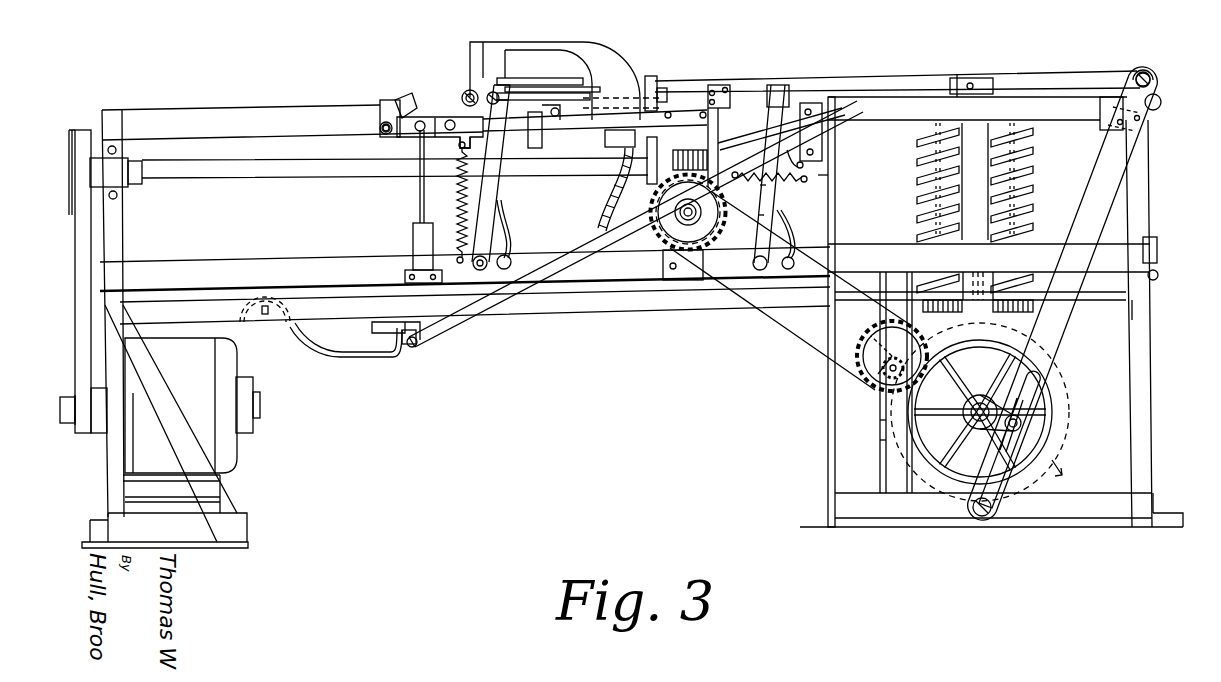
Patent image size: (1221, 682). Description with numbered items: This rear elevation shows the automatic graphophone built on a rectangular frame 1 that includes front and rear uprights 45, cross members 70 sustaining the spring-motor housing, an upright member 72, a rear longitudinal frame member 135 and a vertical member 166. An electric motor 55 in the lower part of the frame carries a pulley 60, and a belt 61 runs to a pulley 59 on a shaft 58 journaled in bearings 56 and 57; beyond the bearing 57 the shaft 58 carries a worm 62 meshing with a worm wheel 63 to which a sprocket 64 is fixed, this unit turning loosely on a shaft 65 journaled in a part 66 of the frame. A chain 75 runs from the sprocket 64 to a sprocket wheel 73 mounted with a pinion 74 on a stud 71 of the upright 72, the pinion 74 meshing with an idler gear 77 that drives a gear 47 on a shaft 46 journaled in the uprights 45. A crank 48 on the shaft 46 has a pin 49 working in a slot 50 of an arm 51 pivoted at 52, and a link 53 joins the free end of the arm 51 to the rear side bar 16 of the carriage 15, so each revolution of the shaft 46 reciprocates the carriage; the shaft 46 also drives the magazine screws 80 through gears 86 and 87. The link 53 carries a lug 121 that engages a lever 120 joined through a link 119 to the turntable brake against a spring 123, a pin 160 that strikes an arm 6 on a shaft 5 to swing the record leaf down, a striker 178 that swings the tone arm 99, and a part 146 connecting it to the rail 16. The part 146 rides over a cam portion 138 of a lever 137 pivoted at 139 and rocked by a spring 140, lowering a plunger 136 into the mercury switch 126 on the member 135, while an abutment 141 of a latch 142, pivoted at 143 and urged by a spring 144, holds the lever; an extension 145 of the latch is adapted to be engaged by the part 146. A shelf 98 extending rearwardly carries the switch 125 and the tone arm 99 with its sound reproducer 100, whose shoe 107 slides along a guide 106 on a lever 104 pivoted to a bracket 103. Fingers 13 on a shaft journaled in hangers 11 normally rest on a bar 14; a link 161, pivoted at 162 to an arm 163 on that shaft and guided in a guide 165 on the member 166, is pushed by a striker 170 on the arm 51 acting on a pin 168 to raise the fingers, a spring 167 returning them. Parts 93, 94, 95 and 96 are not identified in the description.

The frame 1 is at (1150, 370).
The shaft 5 is at (385, 134).
The arm 6 is at (407, 100).
The hangers 11 is at (383, 326).
The fingers 13 is at (320, 355).
The bar 14 is at (264, 330).
The carriage 15 is at (688, 76).
The side bars 16 is at (467, 90).
The uprights 45 is at (980, 412).
The shaft 46 is at (962, 406).
The gear 47 is at (1070, 410).
The crank 48 is at (962, 428).
The pin 49 is at (1022, 428).
The slot 50 is at (1035, 380).
The arm 51 is at (1068, 325).
The pivot 52 is at (990, 520).
The link 53 is at (1068, 72).
The electric motor 55 is at (191, 425).
The bearing 56 is at (125, 185).
The bearing 57 is at (648, 178).
The shaft 58 is at (272, 175).
The pulley 59 is at (70, 150).
The pulley 60 is at (88, 433).
The belt 61 is at (76, 268).
The worm 62 is at (688, 150).
The worm wheel 63 is at (722, 225).
The sprocket 64 is at (658, 248).
The shaft 65 is at (675, 212).
The part of frame 66 is at (683, 287).
The cross members 70 is at (880, 422).
The stud 71 is at (875, 388).
The upright member 72 is at (880, 462).
The sprocket wheel 73 is at (866, 342).
The pinion 74 is at (870, 345).
The chain 75 is at (822, 258).
The idler gear 77 is at (905, 375).
The screws 80 is at (918, 184).
The spur gear 86 is at (978, 272).
The gears 87 is at (922, 285).
The bracket 93 is at (1158, 245).
The pin 94 is at (1160, 272).
The frame post 95 is at (1152, 316).
The stop 96 is at (1162, 103).
The shelf 98 is at (612, 150).
The tone arm 99 is at (616, 55).
The sound reproducer 100 is at (512, 42).
The bracket 103 is at (665, 102).
The lever 104 is at (652, 78).
The guide 106 is at (565, 86).
The shoe 107 is at (533, 78).
The link 119 is at (737, 140).
The lever 120 is at (780, 195).
The lug 121 is at (777, 88).
The spring 123 is at (795, 215).
The switch 125 is at (545, 135).
The switch 126 is at (412, 237).
The rear longitudinal frame member 135 is at (320, 260).
The plunger 136 is at (419, 188).
The lever 137 is at (414, 120).
The cam portion 138 is at (390, 100).
The pivot 139 is at (460, 147).
The spring 140 is at (462, 200).
The abutment 141 is at (498, 128).
The latch 142 is at (500, 188).
The pivot 143 is at (476, 266).
The spring 144 is at (508, 236).
The extension 145 is at (510, 100).
The part 146 is at (497, 78).
The pin 160 is at (716, 88).
The link 161 is at (482, 315).
The pivot 162 is at (420, 343).
The arm 163 is at (412, 348).
The guide 165 is at (823, 135).
The vertical member 166 is at (822, 176).
The spring 167 is at (769, 185).
The pin 168 is at (805, 166).
The striker 170 is at (1102, 120).
The striker 178 is at (955, 78).